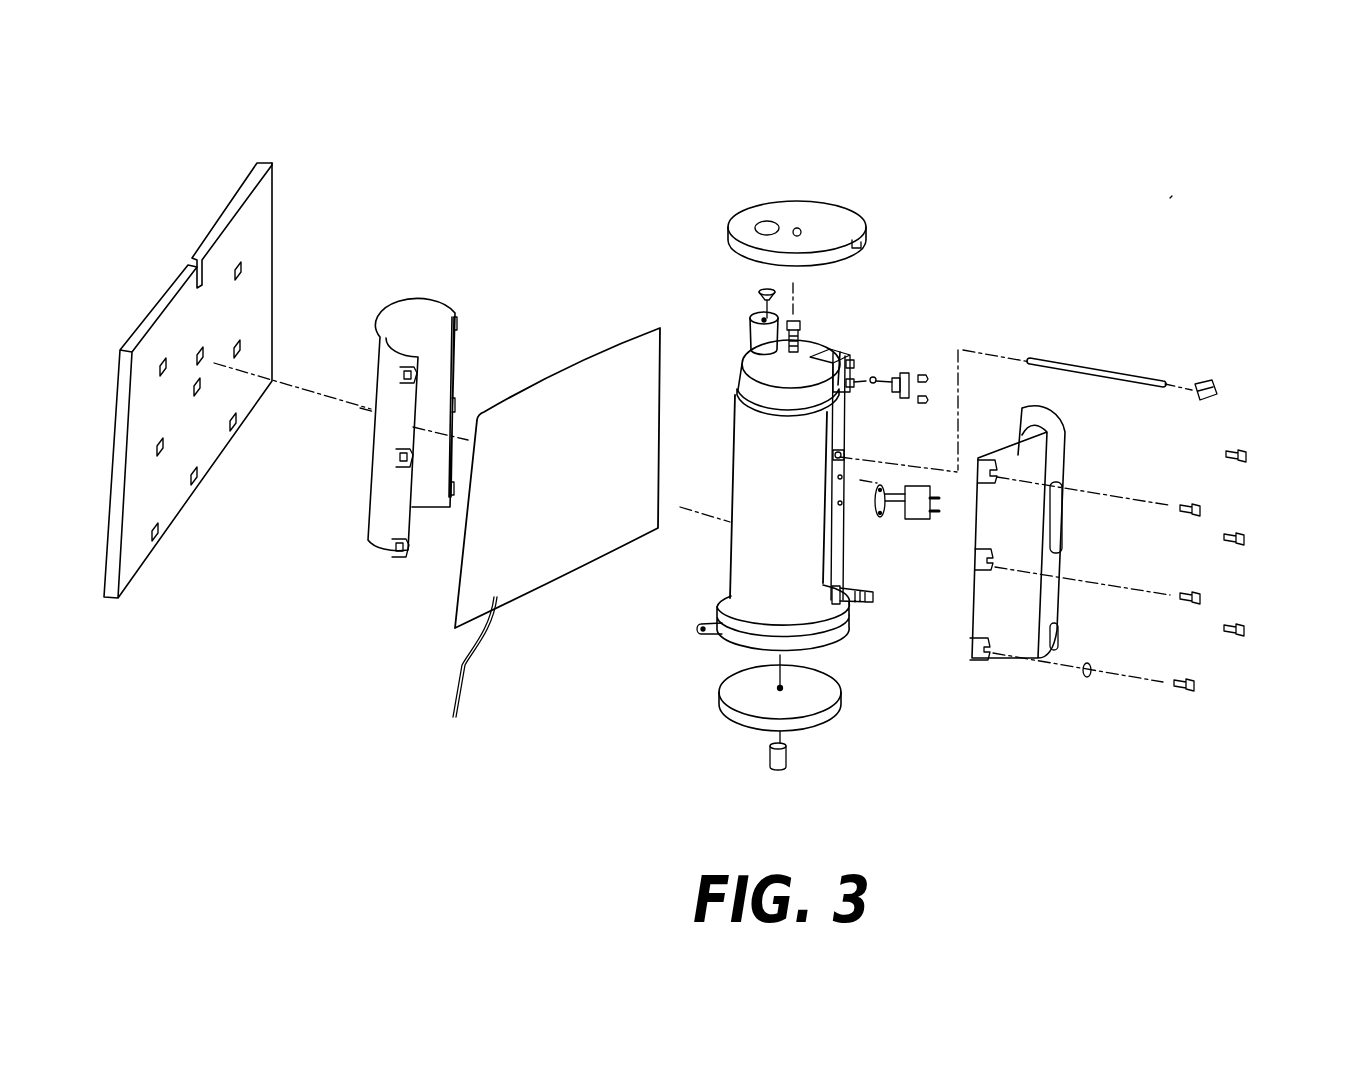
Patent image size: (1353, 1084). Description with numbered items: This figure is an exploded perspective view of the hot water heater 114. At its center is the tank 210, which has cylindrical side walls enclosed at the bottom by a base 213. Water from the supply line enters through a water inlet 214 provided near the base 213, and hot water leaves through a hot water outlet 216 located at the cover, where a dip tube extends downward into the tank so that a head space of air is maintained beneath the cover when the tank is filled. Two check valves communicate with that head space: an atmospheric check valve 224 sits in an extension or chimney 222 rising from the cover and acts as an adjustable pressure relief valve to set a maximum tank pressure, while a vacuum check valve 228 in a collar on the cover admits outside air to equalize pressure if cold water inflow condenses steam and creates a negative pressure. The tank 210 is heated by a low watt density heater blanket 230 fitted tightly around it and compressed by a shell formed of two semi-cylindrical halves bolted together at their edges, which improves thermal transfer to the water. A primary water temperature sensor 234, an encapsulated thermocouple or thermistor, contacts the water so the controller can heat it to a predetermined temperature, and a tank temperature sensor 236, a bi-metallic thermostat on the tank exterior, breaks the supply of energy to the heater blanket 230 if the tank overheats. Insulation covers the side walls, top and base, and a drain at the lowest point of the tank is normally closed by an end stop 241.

The hot water heater 114 is at (1178, 191).
The tank 210 is at (723, 548).
The base 213 is at (833, 642).
The water inlet 214 is at (862, 607).
The hot water outlet 216 is at (800, 327).
The extension or chimney 222 is at (752, 337).
The atmospheric check valve 224 is at (757, 293).
The vacuum check valve 228 is at (873, 375).
The heater blanket 230 is at (478, 594).
The primary water temperature sensor 234 is at (1150, 382).
The tank temperature sensor 236 is at (915, 517).
The end stop 241 is at (787, 753).